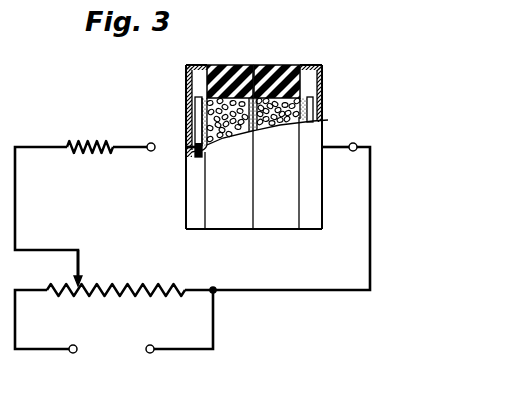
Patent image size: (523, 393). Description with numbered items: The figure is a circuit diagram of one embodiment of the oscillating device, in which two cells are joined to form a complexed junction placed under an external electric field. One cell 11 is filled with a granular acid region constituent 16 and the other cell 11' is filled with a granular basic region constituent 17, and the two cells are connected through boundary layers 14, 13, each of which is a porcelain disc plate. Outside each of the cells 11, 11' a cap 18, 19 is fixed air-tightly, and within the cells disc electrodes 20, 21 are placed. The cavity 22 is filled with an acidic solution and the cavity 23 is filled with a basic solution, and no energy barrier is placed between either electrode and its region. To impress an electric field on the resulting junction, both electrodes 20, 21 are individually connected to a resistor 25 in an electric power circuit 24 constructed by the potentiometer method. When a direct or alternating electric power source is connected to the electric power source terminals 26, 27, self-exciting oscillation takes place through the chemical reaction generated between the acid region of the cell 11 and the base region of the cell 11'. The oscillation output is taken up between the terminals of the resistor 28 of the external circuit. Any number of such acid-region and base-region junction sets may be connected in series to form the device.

The cell 11 is at (230, 67).
The cell 11' is at (277, 67).
The boundary layer 13 is at (213, 146).
The boundary layer 14 is at (248, 131).
The granular acid region constituent 16 is at (220, 160).
The granular basic region constituent 17 is at (267, 160).
The cap 18 is at (188, 65).
The cap 19 is at (316, 64).
The disc electrode 20 is at (198, 105).
The disc electrode 21 is at (306, 106).
The cavity 22 is at (196, 84).
The cavity 23 is at (312, 76).
The electric power circuit 24 is at (120, 333).
The resistor 25 is at (127, 284).
The electric power source terminal 26 is at (70, 353).
The electric power source terminal 27 is at (150, 353).
The resistor 28 is at (70, 148).